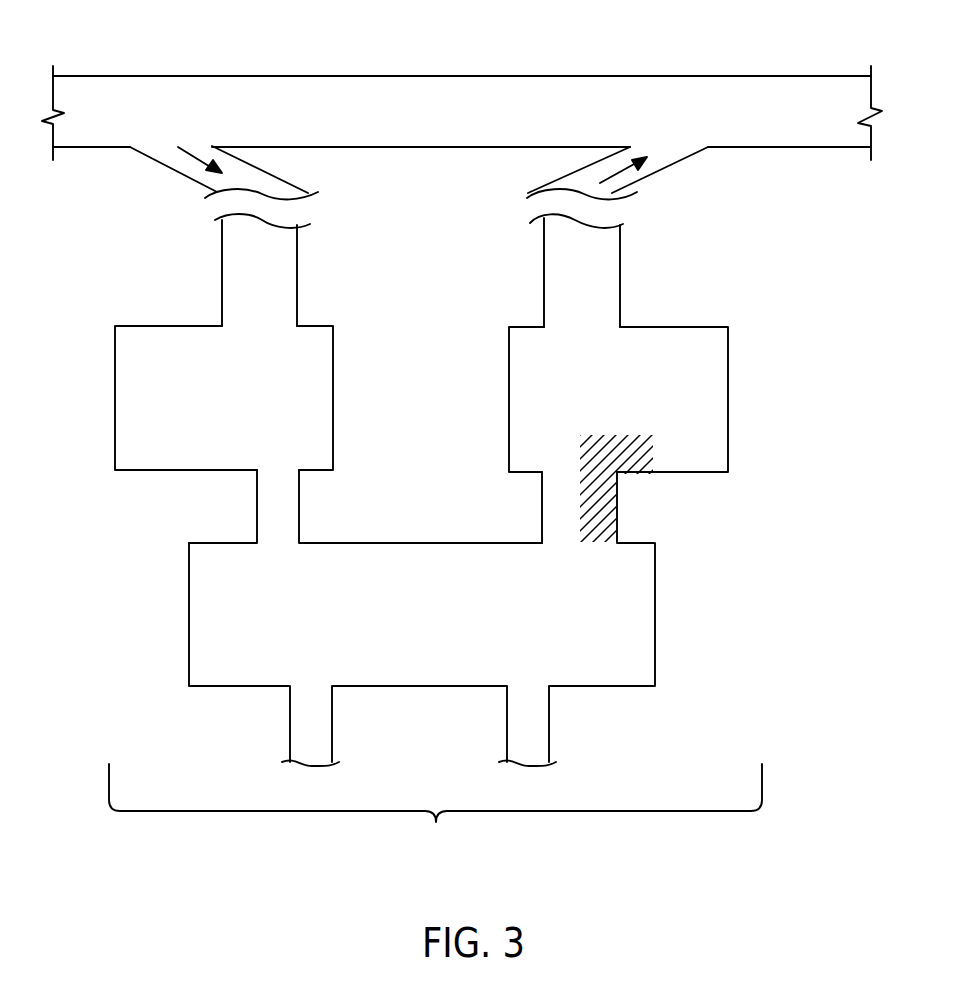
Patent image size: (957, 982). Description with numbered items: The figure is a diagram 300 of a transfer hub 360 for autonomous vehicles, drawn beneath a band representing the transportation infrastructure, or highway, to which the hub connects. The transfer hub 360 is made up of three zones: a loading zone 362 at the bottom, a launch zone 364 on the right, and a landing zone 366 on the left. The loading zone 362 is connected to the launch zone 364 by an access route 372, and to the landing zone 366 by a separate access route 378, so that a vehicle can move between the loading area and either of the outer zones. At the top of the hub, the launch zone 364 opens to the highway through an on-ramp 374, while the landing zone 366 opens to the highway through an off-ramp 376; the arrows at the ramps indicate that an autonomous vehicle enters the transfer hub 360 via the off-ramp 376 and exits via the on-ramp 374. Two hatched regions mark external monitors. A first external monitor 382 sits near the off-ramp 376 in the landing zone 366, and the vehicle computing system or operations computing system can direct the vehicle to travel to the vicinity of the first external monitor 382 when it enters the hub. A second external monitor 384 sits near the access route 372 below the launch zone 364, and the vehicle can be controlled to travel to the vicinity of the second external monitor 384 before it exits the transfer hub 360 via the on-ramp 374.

The diagram 300 is at (460, 30).
The transfer hub 360 is at (435, 818).
The loading zone 362 is at (432, 674).
The launch zone 364 is at (708, 463).
The landing zone 366 is at (167, 448).
The access route 372 is at (555, 503).
The on-ramp 374 is at (612, 292).
The off-ramp 376 is at (282, 242).
The access route 378 is at (287, 509).
The first external monitor 382 is at (242, 301).
The second external monitor 384 is at (605, 517).